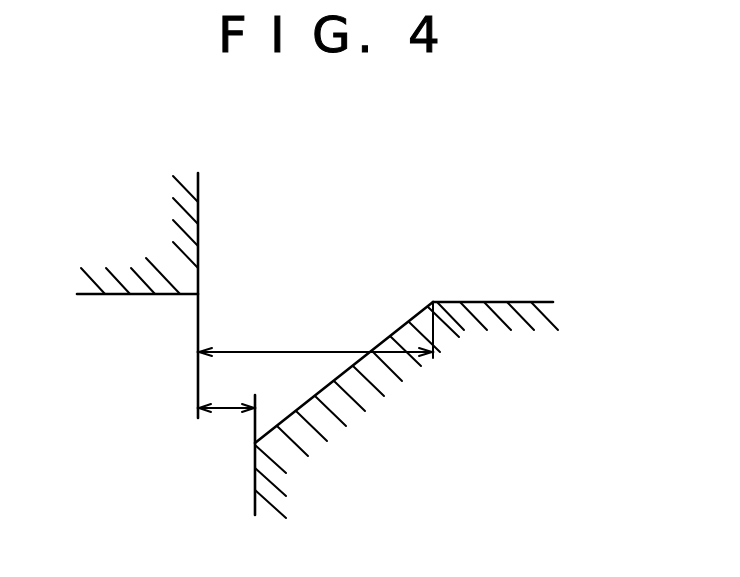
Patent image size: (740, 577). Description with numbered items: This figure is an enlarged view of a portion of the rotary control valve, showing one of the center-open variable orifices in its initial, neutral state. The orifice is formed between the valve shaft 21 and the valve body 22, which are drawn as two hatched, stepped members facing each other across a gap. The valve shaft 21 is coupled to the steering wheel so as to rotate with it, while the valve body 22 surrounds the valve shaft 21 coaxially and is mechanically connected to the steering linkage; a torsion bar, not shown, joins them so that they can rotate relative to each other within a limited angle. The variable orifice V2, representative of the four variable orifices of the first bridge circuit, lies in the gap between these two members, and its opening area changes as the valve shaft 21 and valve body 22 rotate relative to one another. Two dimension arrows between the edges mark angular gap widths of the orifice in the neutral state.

The valve shaft 21 is at (508, 311).
The valve body 22 is at (130, 284).
The variable orifice V2 is at (295, 290).